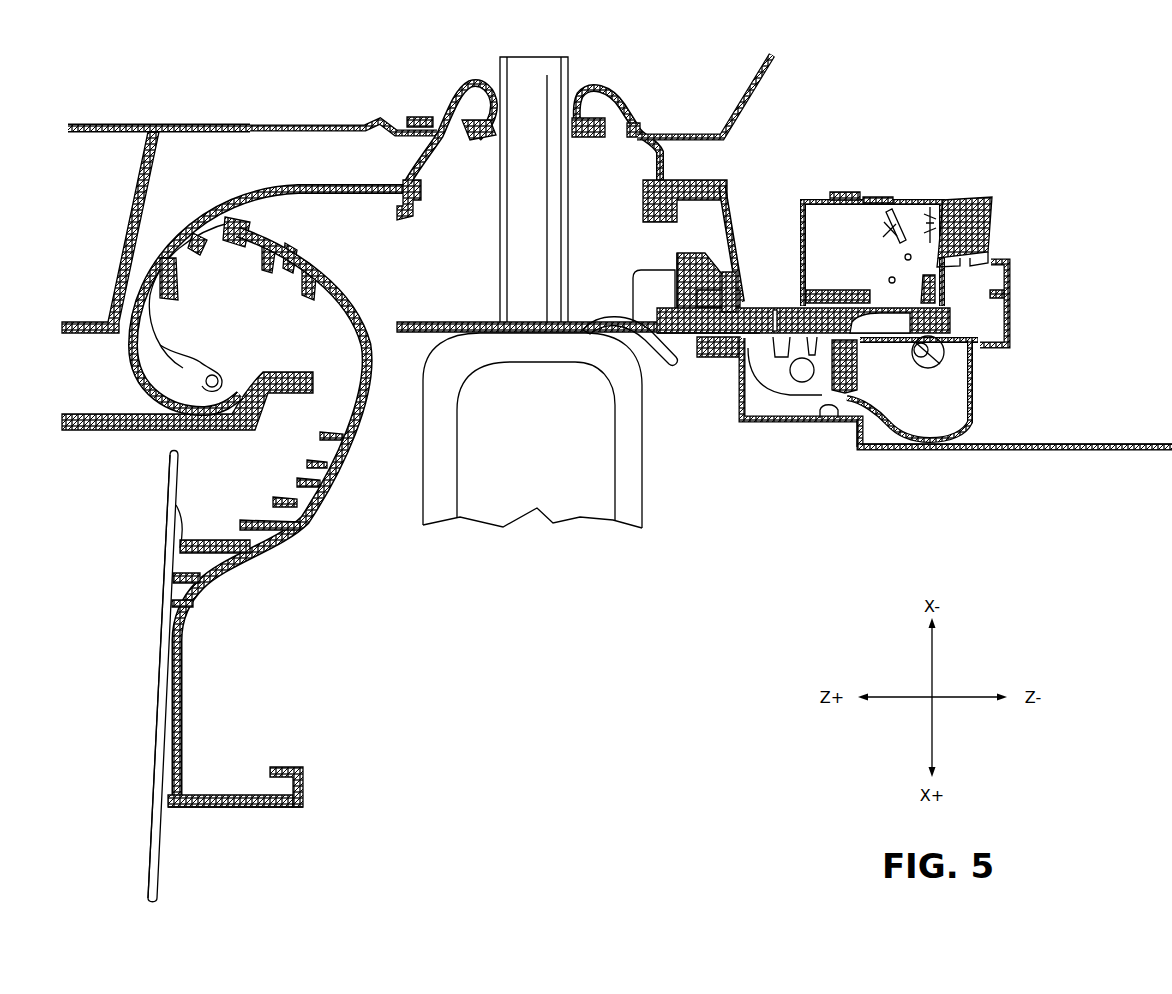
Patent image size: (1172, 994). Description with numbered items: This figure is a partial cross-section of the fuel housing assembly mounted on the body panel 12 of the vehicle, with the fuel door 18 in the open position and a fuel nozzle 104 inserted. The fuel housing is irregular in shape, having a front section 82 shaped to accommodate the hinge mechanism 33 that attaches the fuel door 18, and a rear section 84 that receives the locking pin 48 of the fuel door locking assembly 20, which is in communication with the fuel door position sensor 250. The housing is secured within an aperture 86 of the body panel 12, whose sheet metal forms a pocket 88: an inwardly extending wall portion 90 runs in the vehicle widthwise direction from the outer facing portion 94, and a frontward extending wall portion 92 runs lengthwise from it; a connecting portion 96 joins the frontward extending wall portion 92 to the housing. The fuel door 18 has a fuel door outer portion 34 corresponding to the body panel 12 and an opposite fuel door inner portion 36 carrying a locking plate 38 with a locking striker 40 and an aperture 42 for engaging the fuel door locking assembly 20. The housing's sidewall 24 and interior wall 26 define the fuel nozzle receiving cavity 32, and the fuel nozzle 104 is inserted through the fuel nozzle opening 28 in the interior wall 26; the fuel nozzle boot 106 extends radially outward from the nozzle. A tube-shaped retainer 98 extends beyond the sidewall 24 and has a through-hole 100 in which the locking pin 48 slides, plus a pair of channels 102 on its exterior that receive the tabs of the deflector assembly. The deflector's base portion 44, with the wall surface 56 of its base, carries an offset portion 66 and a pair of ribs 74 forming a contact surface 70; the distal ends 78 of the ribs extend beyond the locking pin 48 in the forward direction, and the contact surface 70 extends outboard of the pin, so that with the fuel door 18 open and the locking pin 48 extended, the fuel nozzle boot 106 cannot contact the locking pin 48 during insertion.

The body panel 12 is at (1040, 450).
The fuel door 18 is at (131, 720).
The fuel door locking assembly 20 is at (770, 205).
The sidewall 24 is at (716, 222).
The interior wall 26 is at (378, 193).
The fuel nozzle opening 28 is at (493, 100).
The fuel nozzle receiving cavity 32 is at (458, 152).
The hinge mechanism 33 is at (184, 368).
The fuel door outer portion 34 is at (157, 655).
The fuel door inner portion 36 is at (178, 700).
The locking plate 38 is at (228, 781).
The locking striker 40 is at (277, 768).
The aperture 42 is at (275, 805).
The base portion 44 is at (686, 364).
The locking pin 48 is at (667, 245).
The wall surface 56 is at (750, 355).
The offset portion 66 is at (700, 300).
The contact surface 70 is at (640, 350).
The pair of ribs 74 is at (645, 268).
The distal ends 78 is at (633, 290).
The front section 82 is at (285, 218).
The rear section 84 is at (734, 252).
The aperture 86 is at (663, 456).
The pocket 88 is at (840, 439).
The inwardly extending wall portion 90 is at (875, 437).
The frontward extending wall portion 92 is at (828, 418).
The outer facing portion 94 is at (940, 450).
The connecting portion 96 is at (785, 425).
The retainer 98 is at (728, 300).
The through-hole 100 is at (745, 303).
The pair of channels 102 is at (720, 360).
The fuel nozzle 104 is at (515, 283).
The fuel nozzle boot 106 is at (600, 330).
The fuel door position sensor 250 is at (932, 190).